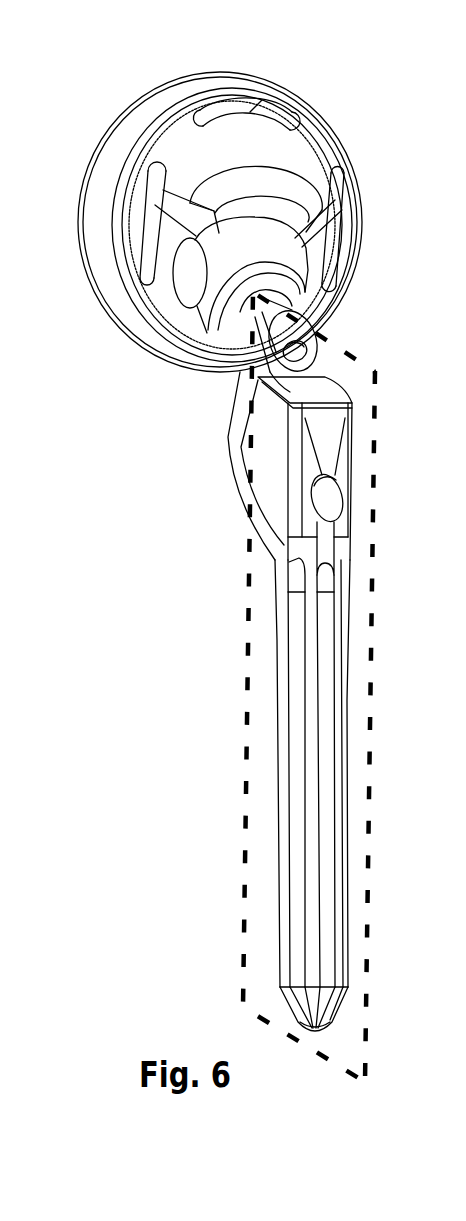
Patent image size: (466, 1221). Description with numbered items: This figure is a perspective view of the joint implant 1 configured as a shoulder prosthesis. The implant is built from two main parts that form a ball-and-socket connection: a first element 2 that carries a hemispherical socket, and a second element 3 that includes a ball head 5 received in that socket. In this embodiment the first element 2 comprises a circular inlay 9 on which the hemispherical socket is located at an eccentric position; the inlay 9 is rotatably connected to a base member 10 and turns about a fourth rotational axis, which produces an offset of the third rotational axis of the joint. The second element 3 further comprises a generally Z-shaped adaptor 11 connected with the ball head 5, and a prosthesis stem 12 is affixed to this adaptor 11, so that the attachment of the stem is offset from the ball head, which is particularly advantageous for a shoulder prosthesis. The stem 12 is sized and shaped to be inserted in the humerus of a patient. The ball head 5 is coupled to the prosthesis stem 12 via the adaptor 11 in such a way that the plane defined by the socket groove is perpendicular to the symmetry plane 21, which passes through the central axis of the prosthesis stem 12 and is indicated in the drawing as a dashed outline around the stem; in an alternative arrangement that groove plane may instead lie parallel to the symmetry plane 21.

The joint implant 1 is at (343, 113).
The first element 2 is at (118, 340).
The second element 3 is at (297, 300).
The ball head 5 is at (273, 247).
The circular inlay 9 is at (180, 157).
The base member 10 is at (90, 173).
The Z-shaped adaptor 11 is at (240, 373).
The prosthesis stem 12 is at (293, 577).
The symmetry plane 21 is at (353, 382).